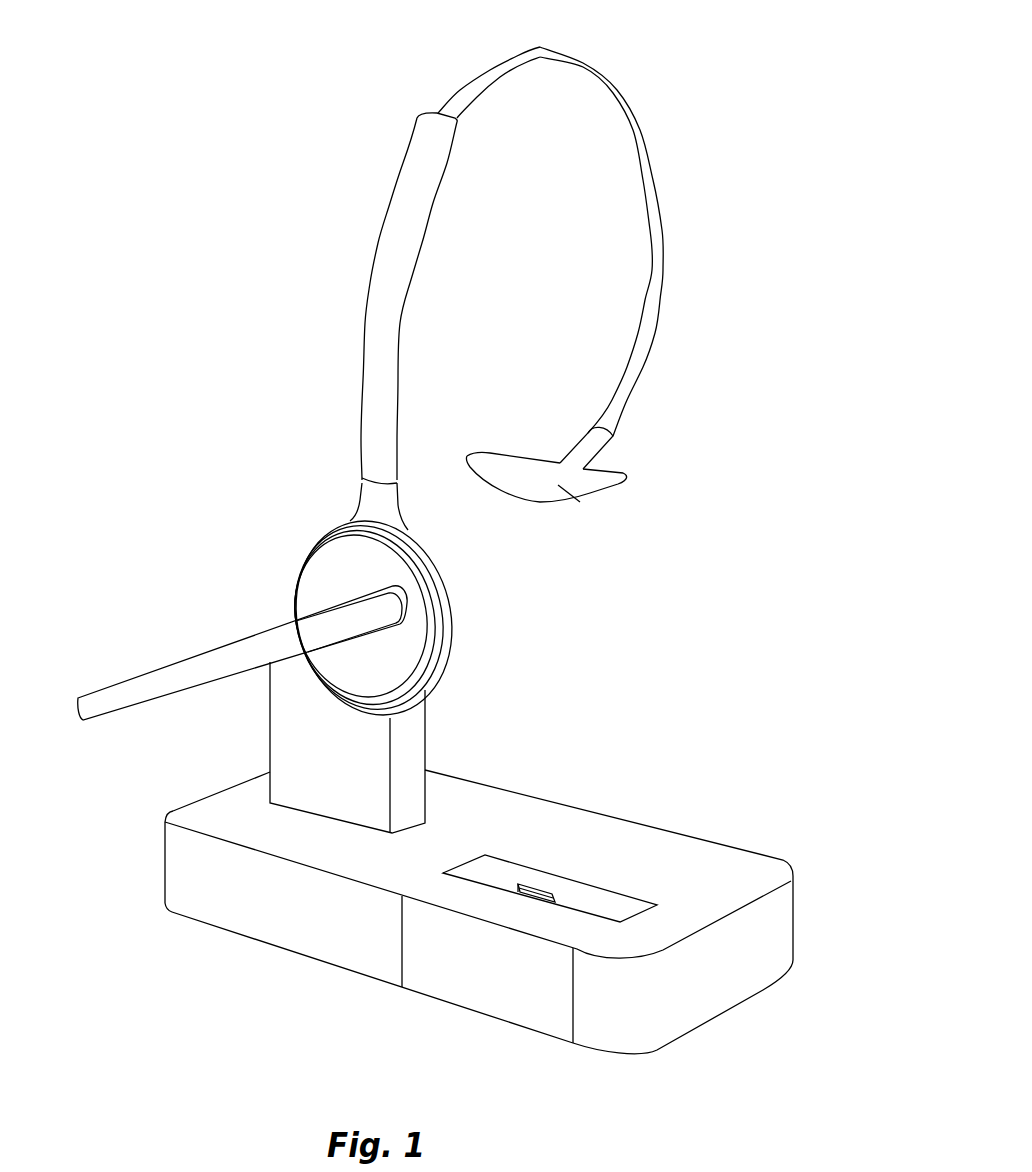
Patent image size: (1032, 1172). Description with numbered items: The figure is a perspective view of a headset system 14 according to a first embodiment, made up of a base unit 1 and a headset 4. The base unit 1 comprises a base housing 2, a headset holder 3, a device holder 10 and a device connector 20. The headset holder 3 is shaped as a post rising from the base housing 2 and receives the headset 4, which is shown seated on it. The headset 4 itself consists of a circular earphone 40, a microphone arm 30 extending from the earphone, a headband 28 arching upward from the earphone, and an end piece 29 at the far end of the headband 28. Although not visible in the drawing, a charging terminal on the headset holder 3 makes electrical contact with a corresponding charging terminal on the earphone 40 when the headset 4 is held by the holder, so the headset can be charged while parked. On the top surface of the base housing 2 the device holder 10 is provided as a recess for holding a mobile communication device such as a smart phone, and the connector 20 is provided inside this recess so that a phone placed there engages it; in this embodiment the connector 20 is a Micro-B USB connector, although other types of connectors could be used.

The base unit 1 is at (728, 875).
The base housing 2 is at (267, 905).
The headset holder 3 is at (334, 772).
The headset 4 is at (380, 397).
The device holder 10 is at (617, 907).
The headset system 14 is at (738, 1074).
The device connector 20 is at (540, 890).
The headband 28 is at (633, 123).
The end piece 29 is at (607, 504).
The microphone arm 30 is at (168, 678).
The circular earphone 40 is at (320, 572).